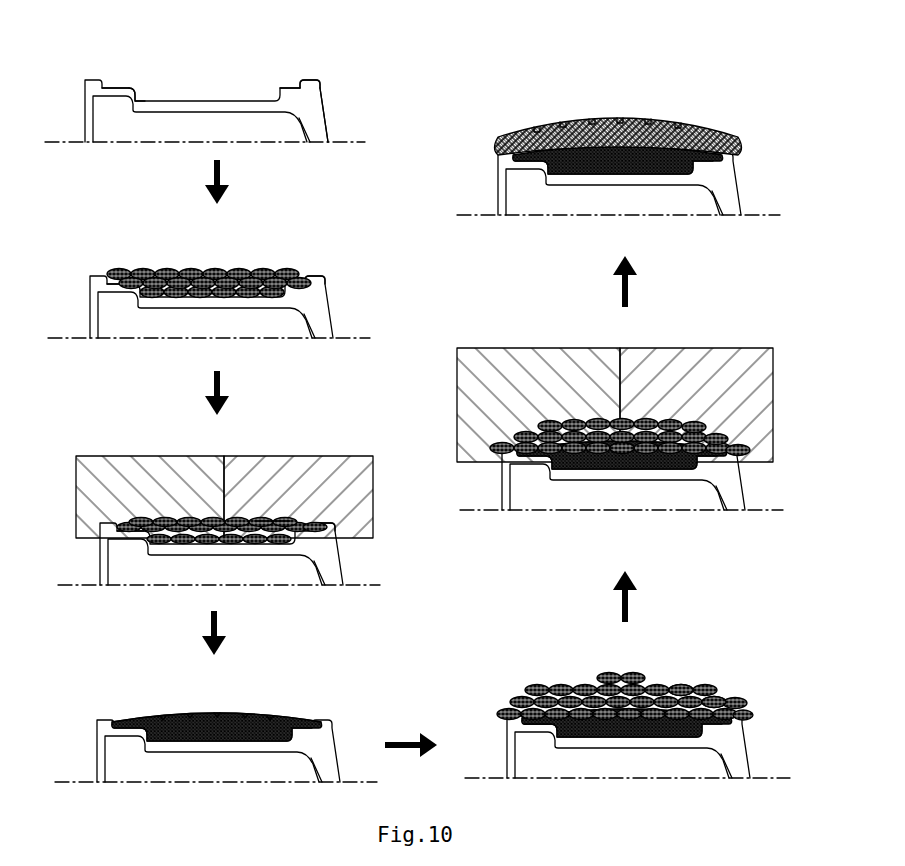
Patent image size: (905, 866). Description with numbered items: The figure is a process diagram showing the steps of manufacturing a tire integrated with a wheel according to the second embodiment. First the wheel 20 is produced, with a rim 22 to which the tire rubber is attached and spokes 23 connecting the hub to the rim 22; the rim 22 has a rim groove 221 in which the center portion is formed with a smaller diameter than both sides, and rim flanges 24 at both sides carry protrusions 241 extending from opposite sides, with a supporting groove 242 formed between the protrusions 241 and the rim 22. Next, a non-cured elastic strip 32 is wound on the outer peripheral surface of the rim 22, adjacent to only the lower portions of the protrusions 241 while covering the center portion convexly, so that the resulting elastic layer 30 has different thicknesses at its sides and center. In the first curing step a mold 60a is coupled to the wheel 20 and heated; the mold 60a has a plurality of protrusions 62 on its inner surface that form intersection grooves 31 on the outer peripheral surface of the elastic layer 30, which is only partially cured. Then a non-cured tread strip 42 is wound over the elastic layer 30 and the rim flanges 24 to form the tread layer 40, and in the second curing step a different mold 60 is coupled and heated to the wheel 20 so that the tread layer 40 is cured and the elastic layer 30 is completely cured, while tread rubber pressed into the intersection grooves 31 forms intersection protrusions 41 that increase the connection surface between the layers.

The wheel 20 is at (113, 550).
The rim 22 is at (177, 110).
The rim groove 221 is at (160, 100).
The spokes 23 is at (317, 124).
The rim flanges 24 is at (318, 80).
The protrusions 241 is at (303, 82).
The supporting groove 242 is at (302, 87).
The elastic layer 30 is at (274, 222).
The intersection grooves 31 is at (253, 517).
The elastic strip 32 is at (210, 271).
The tread layer 40 is at (662, 137).
The intersection protrusions 41 is at (710, 433).
The tread strip 42 is at (673, 683).
The mold 60 is at (490, 363).
The mold 60a is at (120, 463).
The protrusions 62 is at (260, 520).